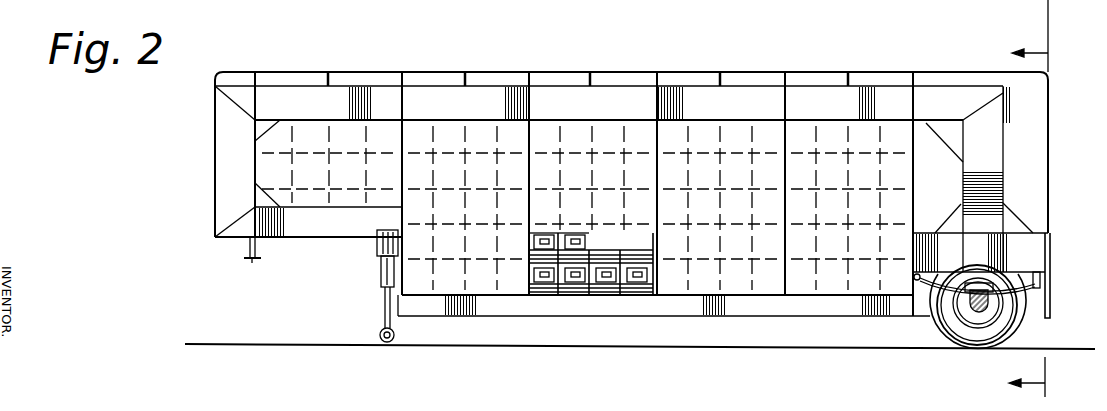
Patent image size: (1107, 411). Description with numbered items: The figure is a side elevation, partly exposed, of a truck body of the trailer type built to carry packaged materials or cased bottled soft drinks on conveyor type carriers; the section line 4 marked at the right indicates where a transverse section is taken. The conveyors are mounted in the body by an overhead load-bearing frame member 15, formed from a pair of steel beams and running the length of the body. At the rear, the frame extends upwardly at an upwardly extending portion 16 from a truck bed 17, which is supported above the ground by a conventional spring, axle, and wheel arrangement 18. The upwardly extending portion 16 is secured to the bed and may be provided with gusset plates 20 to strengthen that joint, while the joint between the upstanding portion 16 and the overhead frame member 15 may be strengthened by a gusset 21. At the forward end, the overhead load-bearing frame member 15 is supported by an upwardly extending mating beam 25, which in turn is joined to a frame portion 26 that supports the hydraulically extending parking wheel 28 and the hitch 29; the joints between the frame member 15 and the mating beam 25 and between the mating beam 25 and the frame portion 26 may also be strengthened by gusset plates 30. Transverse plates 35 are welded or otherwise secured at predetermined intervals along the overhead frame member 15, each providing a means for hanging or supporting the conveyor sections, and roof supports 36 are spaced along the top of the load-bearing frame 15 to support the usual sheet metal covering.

The section line 4- 4 is at (1017, 198).
The overhead load-bearing frame member 15 is at (745, 105).
The upwardly extending portion 16 is at (990, 170).
The truck bed 17 is at (1040, 237).
The spring, axle, and wheel arrangement 18 is at (1000, 314).
The gusset plates 20 is at (955, 223).
The gusset 21 is at (960, 143).
The upwardly extending mating beam 25 is at (228, 207).
The frame portion 26 is at (318, 225).
The hydraulically extending parking wheel 28 is at (380, 335).
The hitch 29 is at (251, 262).
The gusset plates 30 is at (262, 127).
The transverse plates 35 is at (406, 92).
The roof supports 36 is at (330, 73).